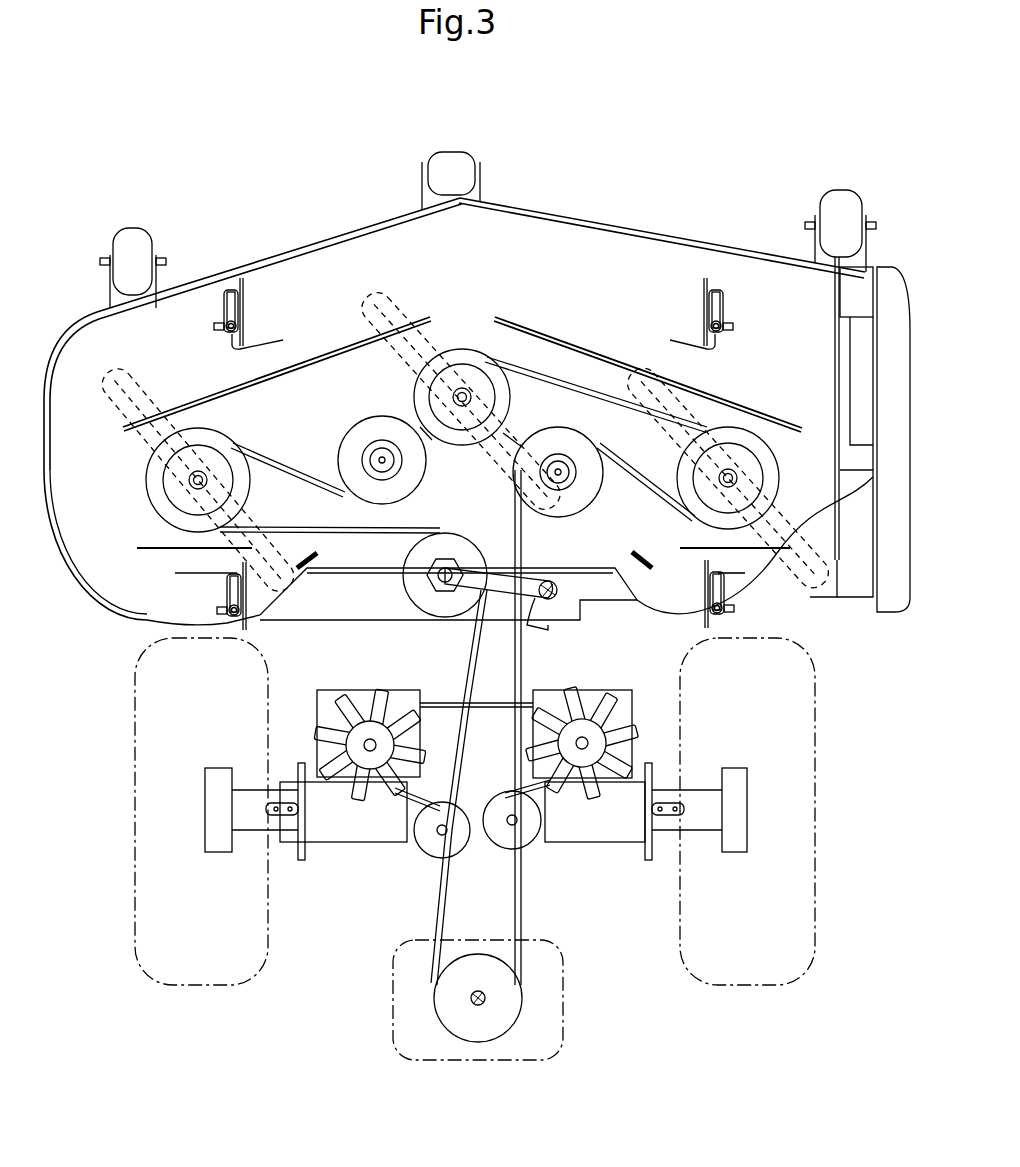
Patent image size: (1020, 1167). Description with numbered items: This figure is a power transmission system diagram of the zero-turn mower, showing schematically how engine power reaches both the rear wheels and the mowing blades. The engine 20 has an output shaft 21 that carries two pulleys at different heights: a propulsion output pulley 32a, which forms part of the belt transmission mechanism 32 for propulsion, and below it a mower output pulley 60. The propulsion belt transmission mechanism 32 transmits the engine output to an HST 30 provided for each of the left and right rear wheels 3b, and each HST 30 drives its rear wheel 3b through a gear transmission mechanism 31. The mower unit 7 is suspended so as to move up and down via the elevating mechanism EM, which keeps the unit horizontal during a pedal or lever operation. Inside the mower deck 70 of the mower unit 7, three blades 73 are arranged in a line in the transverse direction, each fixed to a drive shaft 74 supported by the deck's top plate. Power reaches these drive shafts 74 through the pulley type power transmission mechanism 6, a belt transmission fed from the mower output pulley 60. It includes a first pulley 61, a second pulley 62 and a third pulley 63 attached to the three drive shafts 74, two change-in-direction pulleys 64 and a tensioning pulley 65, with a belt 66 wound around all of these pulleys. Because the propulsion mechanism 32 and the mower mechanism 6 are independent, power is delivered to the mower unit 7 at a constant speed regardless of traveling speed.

The mower unit 7 is at (291, 246).
The mower deck 70 is at (637, 247).
The elevating mechanism EM is at (726, 300).
The blade 73 is at (133, 368).
The drive shaft 74 is at (193, 480).
The first pulley 61 is at (158, 507).
The second pulley 62 is at (507, 396).
The third pulley 63 is at (770, 462).
The change-in-direction pulley 64 is at (412, 487).
The belt 66 is at (296, 465).
The tensioning pulley 65 is at (410, 594).
The pulley type power transmission mechanism 6 is at (520, 670).
The belt transmission mechanism for propulsion 32 is at (452, 703).
The HST 30 is at (360, 690).
The gear transmission mechanism 31 is at (338, 838).
The rear wheel 3b is at (135, 822).
The output shaft 21 is at (472, 999).
The propulsion output pulley 32a is at (518, 1001).
The mower output pulley 60 is at (478, 998).
The engine 20 is at (495, 1062).